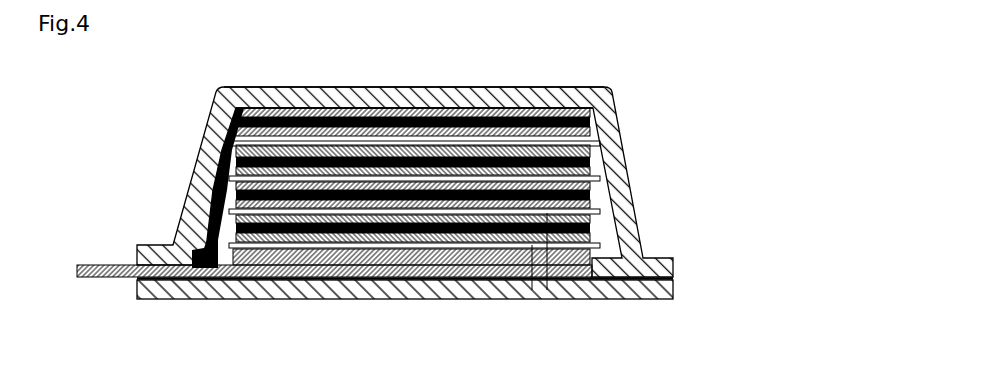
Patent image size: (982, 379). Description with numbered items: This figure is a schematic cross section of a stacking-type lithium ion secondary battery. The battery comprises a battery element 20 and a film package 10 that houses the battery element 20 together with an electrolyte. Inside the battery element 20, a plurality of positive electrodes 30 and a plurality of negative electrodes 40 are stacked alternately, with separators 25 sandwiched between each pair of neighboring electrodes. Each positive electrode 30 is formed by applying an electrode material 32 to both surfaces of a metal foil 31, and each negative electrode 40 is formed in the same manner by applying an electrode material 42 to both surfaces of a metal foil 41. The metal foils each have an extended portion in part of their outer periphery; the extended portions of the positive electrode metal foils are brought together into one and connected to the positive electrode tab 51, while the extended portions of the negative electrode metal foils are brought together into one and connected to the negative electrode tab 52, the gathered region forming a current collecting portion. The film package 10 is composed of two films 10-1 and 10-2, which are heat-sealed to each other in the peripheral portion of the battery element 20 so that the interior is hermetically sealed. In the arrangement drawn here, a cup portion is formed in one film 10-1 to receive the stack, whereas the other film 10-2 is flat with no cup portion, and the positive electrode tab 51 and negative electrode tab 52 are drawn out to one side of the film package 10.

The film package 10 is at (446, 282).
The film 10-1 is at (427, 253).
The film 10-2 is at (673, 299).
The battery element 20 is at (303, 276).
The separator 25 is at (547, 290).
The positive electrode 30 is at (405, 166).
The metal foil 31 is at (415, 88).
The electrode material 32 is at (440, 148).
The negative electrode 40 is at (457, 154).
The metal foil 41 is at (500, 95).
The electrode material 42 is at (537, 131).
The positive electrode tab 51 is at (334, 252).
The negative electrode tab 52 is at (103, 265).